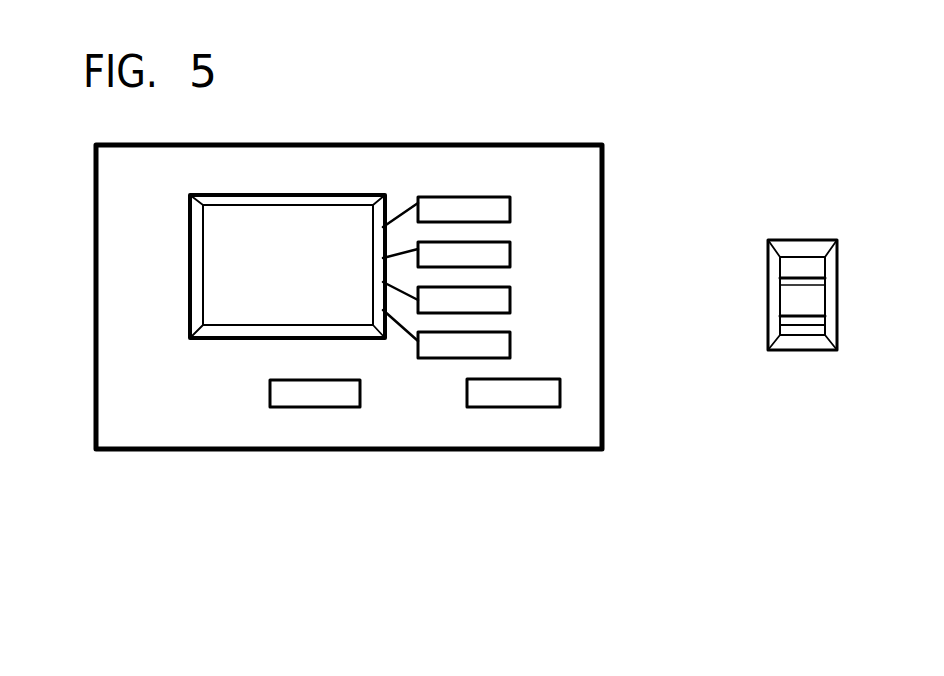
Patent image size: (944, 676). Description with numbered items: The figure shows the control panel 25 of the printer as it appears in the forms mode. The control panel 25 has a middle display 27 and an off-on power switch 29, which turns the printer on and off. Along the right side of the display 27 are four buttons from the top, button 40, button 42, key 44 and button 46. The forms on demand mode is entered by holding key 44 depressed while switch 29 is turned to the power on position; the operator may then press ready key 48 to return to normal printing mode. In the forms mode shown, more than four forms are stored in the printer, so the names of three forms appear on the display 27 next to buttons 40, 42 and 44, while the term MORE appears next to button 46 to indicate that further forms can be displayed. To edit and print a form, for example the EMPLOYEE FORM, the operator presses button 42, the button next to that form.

The control panel 25 is at (127, 474).
The display 27 is at (250, 310).
The off-on power switch 29 is at (805, 303).
The button 40 is at (482, 210).
The button 42 is at (482, 255).
The key 44 is at (488, 300).
The button 46 is at (495, 343).
The ready key 48 is at (328, 397).